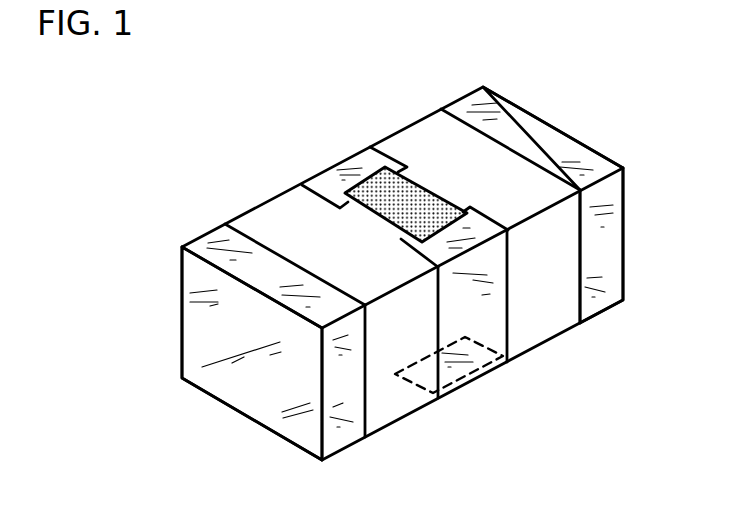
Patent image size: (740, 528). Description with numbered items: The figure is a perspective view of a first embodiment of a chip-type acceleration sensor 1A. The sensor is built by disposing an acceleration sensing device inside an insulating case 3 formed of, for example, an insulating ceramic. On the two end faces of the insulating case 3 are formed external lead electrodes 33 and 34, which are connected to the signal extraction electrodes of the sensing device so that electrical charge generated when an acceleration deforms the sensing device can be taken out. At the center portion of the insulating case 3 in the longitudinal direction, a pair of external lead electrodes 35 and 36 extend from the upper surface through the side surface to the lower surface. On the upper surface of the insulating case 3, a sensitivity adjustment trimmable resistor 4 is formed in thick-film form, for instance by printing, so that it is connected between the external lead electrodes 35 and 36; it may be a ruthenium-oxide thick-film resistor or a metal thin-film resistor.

The acceleration sensor 1A is at (190, 158).
The insulating case 3 is at (424, 133).
The sensitivity adjustment trimmable resistor 4 is at (438, 196).
The external lead electrode 33 is at (222, 383).
The external lead electrode 34 is at (613, 223).
The external lead electrode 35 is at (497, 318).
The external lead electrode 36 is at (342, 167).